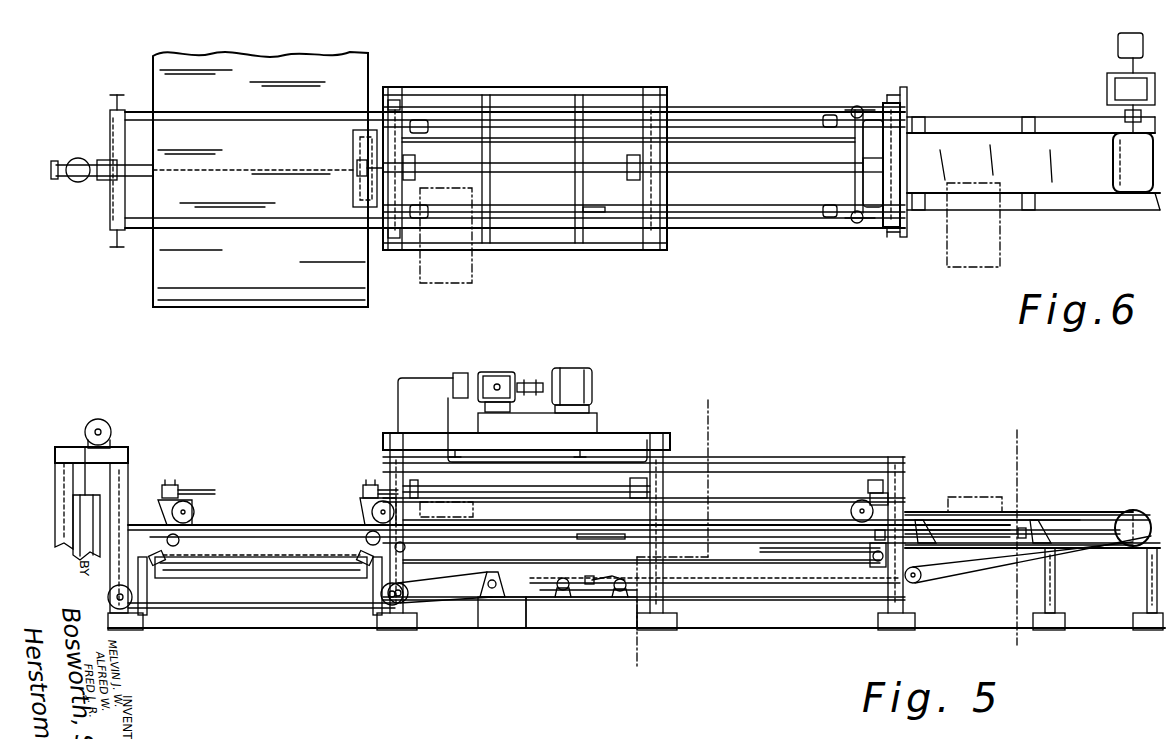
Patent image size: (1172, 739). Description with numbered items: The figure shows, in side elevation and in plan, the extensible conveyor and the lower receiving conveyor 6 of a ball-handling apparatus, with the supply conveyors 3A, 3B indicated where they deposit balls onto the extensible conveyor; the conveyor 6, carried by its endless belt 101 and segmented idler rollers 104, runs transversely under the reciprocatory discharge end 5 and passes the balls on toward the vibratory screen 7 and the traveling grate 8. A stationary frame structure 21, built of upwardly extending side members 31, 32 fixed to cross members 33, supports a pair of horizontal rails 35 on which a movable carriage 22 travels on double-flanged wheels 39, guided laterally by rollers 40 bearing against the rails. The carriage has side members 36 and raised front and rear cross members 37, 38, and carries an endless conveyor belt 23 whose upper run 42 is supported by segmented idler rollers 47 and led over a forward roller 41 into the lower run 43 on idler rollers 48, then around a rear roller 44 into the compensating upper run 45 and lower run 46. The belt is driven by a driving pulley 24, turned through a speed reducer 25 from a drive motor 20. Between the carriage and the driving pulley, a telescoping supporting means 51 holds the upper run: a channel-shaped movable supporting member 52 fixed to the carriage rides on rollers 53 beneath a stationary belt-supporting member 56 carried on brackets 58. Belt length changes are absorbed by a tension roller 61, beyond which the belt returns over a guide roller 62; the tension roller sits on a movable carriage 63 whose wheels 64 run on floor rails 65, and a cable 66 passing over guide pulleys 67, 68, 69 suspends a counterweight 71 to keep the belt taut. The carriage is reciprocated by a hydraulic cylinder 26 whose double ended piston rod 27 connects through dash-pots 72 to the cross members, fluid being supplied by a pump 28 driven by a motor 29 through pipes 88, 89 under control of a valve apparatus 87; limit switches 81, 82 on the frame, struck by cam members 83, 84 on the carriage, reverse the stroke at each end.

In FIG. 6, the reciprocatory discharge end 5 is at (353, 196).
In FIG. 5, the reciprocatory discharge end 5 is at (167, 541).
In FIG. 6, the constantly moving conveyor 6 is at (152, 271).
In FIG. 5, the constantly moving conveyor 6 is at (269, 552).
In FIG. 5, the vibratory screen 7 is at (706, 408).
In FIG. 5, the traveling grate 8 is at (1015, 433).
In FIG. 6, the motor 20 is at (1116, 43).
In FIG. 6, the stationary frame structure 21 is at (630, 250).
In FIG. 5, the stationary frame structure 21 is at (762, 456).
In FIG. 5, the movable carriage 22 is at (480, 546).
In FIG. 6, the endless conveyor belt 23 is at (970, 142).
In FIG. 5, the endless conveyor belt 23 is at (1106, 511).
In FIG. 6, the driving pulley 24 is at (1122, 192).
In FIG. 5, the driving pulley 24 is at (1132, 546).
In FIG. 6, the speed reducer 25 is at (1125, 80).
In FIG. 6, the hydraulic cylinder 26 is at (514, 172).
In FIG. 5, the hydraulic cylinder 26 is at (535, 492).
In FIG. 6, the double ended piston rod 27 is at (770, 172).
In FIG. 5, the double ended piston rod 27 is at (197, 490).
In FIG. 5, the pump 28 is at (492, 372).
In FIG. 5, the motor 29 is at (570, 368).
In FIG. 6, the upwardly extending side members 31 is at (398, 97).
In FIG. 5, the upwardly extending side members 31 is at (648, 552).
In FIG. 5, the upwardly extending side members 32 is at (1056, 590).
In FIG. 5, the cross members 33 is at (729, 457).
In FIG. 6, the rails 35 is at (229, 112).
In FIG. 5, the rails 35 is at (299, 525).
In FIG. 6, the side members 36 is at (726, 107).
In FIG. 5, the side members 36 is at (780, 543).
In FIG. 6, the front raised cross member 37 is at (353, 150).
In FIG. 5, the front raised cross member 37 is at (362, 500).
In FIG. 6, the rear raised cross member 38 is at (878, 146).
In FIG. 5, the rear raised cross member 38 is at (888, 495).
In FIG. 6, the double-flanged wheels 39 is at (383, 108).
In FIG. 5, the double-flanged wheels 39 is at (195, 512).
In FIG. 6, the rollers 40 is at (420, 120).
In FIG. 5, the roller 41 is at (372, 525).
In FIG. 6, the upper run 42 is at (728, 172).
In FIG. 5, the upper run 42 is at (590, 524).
In FIG. 5, the lower run 43 is at (835, 545).
In FIG. 5, the roller 44 is at (878, 562).
In FIG. 5, the upper run 45 is at (770, 564).
In FIG. 5, the lower run 46 is at (719, 598).
In FIG. 5, the idler rollers 47 is at (580, 524).
In FIG. 5, the idler rollers 48 is at (404, 551).
In FIG. 5, the telescoping supporting means 51 is at (990, 548).
In FIG. 5, the movable supporting member 52 is at (970, 531).
In FIG. 5, the rollers 53 is at (882, 531).
In FIG. 5, the stationary belt-supporting member 56 is at (1075, 515).
In FIG. 6, the brackets 58 is at (918, 117).
In FIG. 5, the brackets 58 is at (1036, 520).
In FIG. 5, the tension roller 61 is at (600, 577).
In FIG. 5, the guide roller 62 is at (922, 579).
In FIG. 5, the movable carriage 63 is at (596, 597).
In FIG. 5, the wheels 64 is at (566, 578).
In FIG. 5, the rails 65 is at (540, 597).
In FIG. 6, the cable 66 is at (149, 176).
In FIG. 5, the cable 66 is at (259, 603).
In FIG. 5, the guide pulley 67 is at (381, 593).
In FIG. 5, the guide pulley 68 is at (133, 597).
In FIG. 6, the guide pulley 69 is at (78, 182).
In FIG. 5, the guide pulley 69 is at (112, 435).
In FIG. 6, the counterweight 71 is at (82, 160).
In FIG. 5, the counterweight 71 is at (84, 506).
In FIG. 6, the dash-pots 72 is at (357, 172).
In FIG. 5, the dash-pots 72 is at (178, 485).
In FIG. 6, the limit switch 81 is at (402, 251).
In FIG. 6, the limit switch 82 is at (669, 97).
In FIG. 6, the cam member 83 is at (596, 207).
In FIG. 5, the cam member 83 is at (606, 534).
In FIG. 6, the cam member 84 is at (690, 128).
In FIG. 5, the valve apparatus 87 is at (457, 373).
In FIG. 5, the pipe 88 is at (397, 399).
In FIG. 5, the pipe 89 is at (447, 414).
In FIG. 6, the endless belt 101 is at (162, 80).
In FIG. 5, the endless belt 101 is at (248, 557).
In FIG. 5, the idler rollers 104 is at (298, 571).
In FIG. 6, the supply conveyor 3A is at (472, 270).
In FIG. 5, the supply conveyor 3A is at (473, 508).
In FIG. 6, the supply conveyor 3B is at (947, 256).
In FIG. 5, the supply conveyor 3B is at (979, 497).